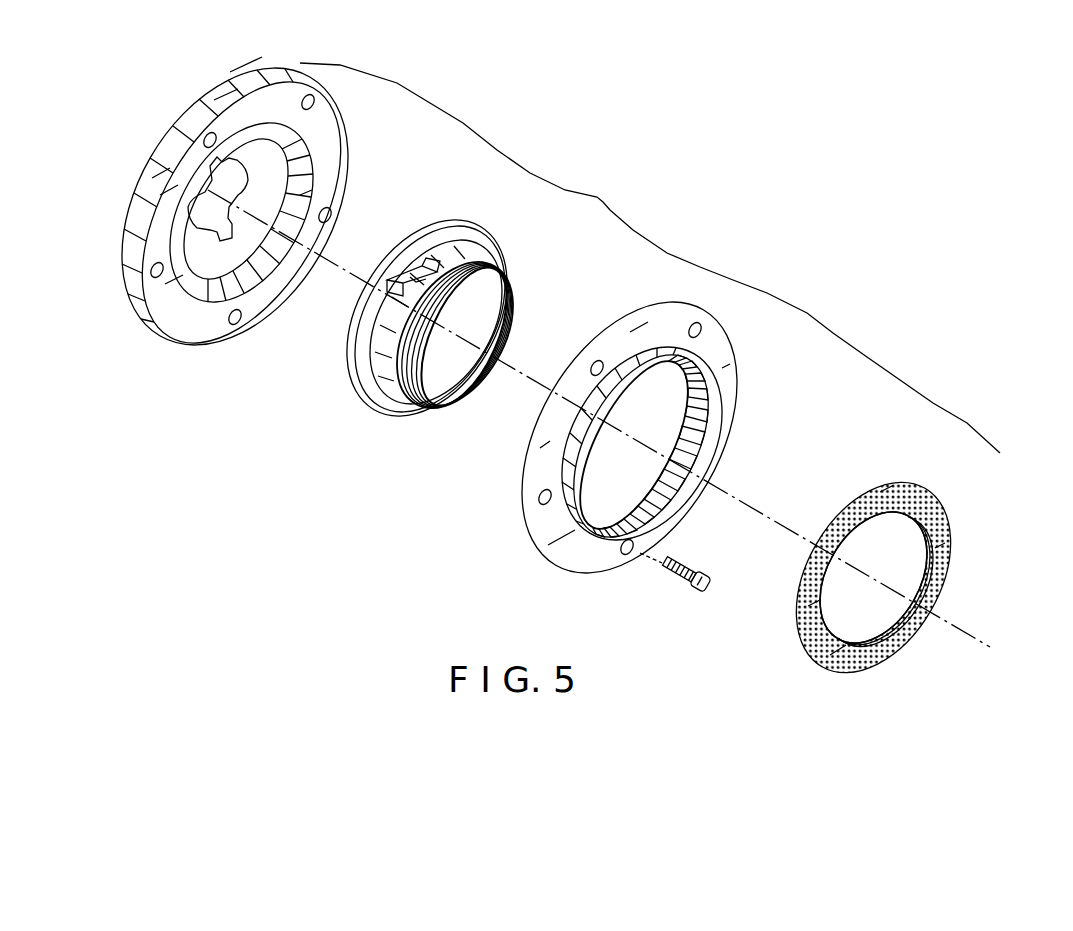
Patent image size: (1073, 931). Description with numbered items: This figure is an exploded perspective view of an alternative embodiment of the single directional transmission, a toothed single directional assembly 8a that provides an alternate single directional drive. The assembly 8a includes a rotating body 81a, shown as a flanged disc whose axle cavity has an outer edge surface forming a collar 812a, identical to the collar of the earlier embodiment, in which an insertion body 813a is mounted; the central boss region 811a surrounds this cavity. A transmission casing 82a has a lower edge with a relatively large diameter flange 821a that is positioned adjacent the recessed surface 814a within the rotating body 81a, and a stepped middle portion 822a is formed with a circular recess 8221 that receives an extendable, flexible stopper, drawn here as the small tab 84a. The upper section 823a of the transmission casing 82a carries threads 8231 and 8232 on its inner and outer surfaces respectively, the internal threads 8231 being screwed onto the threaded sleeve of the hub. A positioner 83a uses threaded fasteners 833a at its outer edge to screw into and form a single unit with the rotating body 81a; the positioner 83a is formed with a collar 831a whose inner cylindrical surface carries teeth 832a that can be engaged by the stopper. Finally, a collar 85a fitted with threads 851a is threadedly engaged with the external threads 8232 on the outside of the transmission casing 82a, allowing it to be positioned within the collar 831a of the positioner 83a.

The toothed single directional assembly 8a is at (650, 258).
The rotating body 81a is at (252, 100).
The annular boss 811a is at (280, 251).
The collar 812a is at (197, 255).
The insertion body 813a is at (240, 195).
The recessed surface 814a is at (253, 258).
The transmission casing 82a is at (424, 320).
The flange 821a is at (463, 235).
The stepped portion 822a is at (487, 260).
The upper section 823a is at (518, 295).
The circular recess 8221 is at (512, 325).
The internal threads 8231 is at (480, 370).
The external threads 8232 is at (370, 366).
The locking tab 84a is at (404, 268).
The positioner 83a is at (648, 438).
The collar 831a is at (717, 407).
The ratchet teeth 832a is at (687, 470).
The threaded fasteners 833a is at (690, 566).
The collar 85a is at (918, 554).
The threads 851a is at (943, 575).